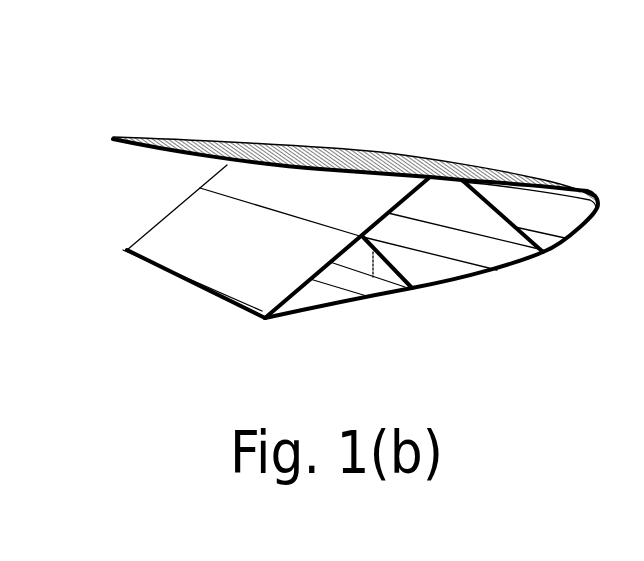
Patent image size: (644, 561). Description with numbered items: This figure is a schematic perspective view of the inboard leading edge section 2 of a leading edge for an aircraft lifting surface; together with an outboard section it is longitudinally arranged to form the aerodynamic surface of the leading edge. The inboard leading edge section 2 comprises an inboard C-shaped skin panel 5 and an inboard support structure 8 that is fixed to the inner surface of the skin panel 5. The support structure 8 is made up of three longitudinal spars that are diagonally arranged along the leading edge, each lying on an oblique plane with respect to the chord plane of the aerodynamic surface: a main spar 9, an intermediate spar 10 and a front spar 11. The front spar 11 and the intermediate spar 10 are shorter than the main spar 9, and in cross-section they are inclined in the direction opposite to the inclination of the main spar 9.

The inboard leading edge section 2 is at (448, 130).
The inboard C-shaped skin panel 5 is at (208, 137).
The inboard support structure 8 is at (157, 200).
The main spar 9 is at (225, 267).
The intermediate spar 10 is at (372, 296).
The front spar 11 is at (503, 214).